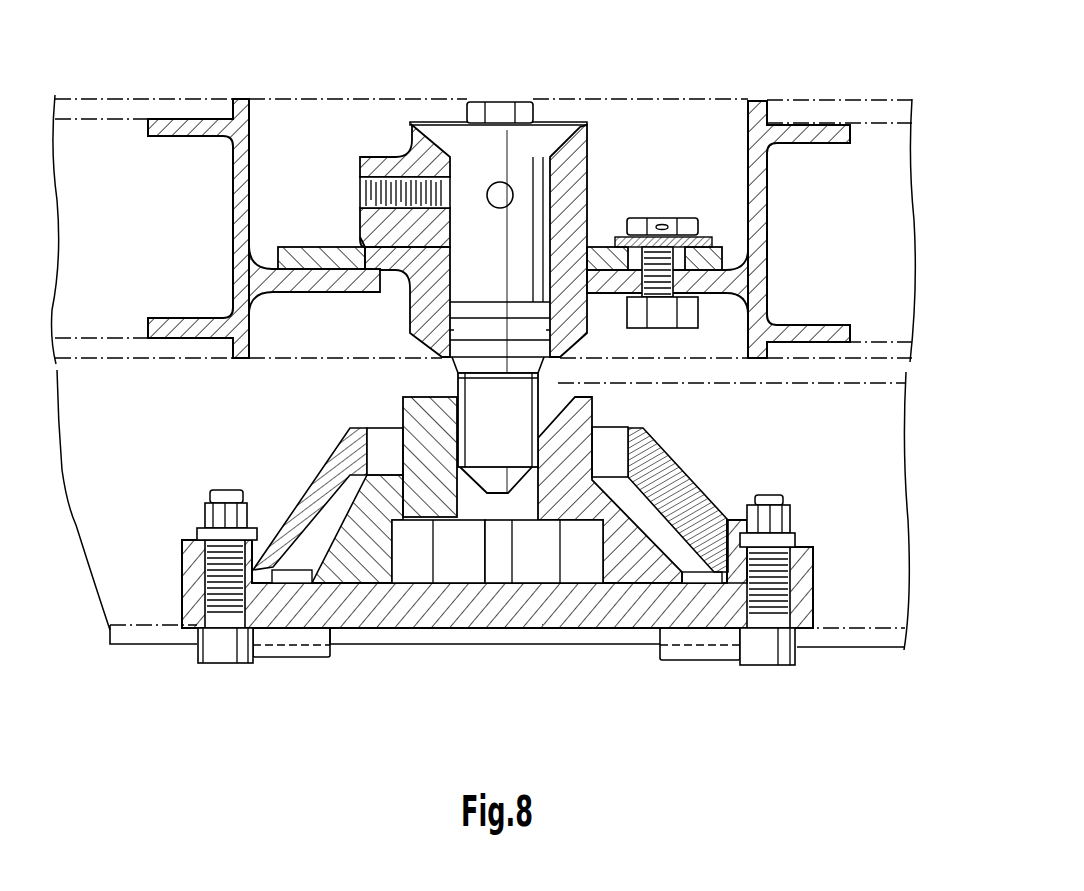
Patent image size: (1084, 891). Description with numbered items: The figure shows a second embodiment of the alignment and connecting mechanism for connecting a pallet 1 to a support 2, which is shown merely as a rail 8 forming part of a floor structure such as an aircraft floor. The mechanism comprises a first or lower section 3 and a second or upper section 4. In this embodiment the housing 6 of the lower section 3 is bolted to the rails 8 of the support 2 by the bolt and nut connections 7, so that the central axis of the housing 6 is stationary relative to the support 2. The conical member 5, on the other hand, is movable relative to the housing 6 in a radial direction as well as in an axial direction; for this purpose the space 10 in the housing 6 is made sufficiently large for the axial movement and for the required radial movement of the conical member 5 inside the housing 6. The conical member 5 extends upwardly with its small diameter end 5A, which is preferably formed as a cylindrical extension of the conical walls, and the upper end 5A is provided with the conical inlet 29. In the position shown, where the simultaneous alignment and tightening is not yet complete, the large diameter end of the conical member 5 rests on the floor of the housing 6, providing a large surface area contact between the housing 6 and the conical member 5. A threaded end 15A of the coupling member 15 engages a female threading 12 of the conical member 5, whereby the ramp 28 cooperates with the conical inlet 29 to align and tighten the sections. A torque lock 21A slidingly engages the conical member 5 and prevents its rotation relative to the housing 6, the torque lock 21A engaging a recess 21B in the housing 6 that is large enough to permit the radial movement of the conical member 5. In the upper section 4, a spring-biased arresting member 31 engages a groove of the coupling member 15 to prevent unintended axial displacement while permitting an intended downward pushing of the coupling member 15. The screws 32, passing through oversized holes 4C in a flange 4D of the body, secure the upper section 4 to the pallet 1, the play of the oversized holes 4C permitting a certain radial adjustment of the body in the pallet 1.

The pallet 1 is at (118, 99).
The support 2 is at (137, 644).
The first or lower section 3 is at (378, 603).
The second or upper section 4 is at (330, 243).
The oversized holes 4C is at (723, 273).
The flange 4D is at (722, 253).
The conical member 5 is at (712, 510).
The small diameter end 5A is at (583, 415).
The housing 6 is at (722, 520).
The bolt and nut connection 7 is at (210, 500).
The rail 8 is at (322, 657).
The inner space 10 is at (338, 527).
The female threading 12 is at (492, 483).
The coupling member 15 is at (540, 150).
The threaded end 15A is at (501, 420).
The torque lock 21A is at (460, 600).
The recess 21B is at (420, 600).
The ramp 28 is at (507, 497).
The conical inlet 29 is at (424, 396).
The arresting member 31 is at (390, 155).
The screws 32 is at (667, 218).